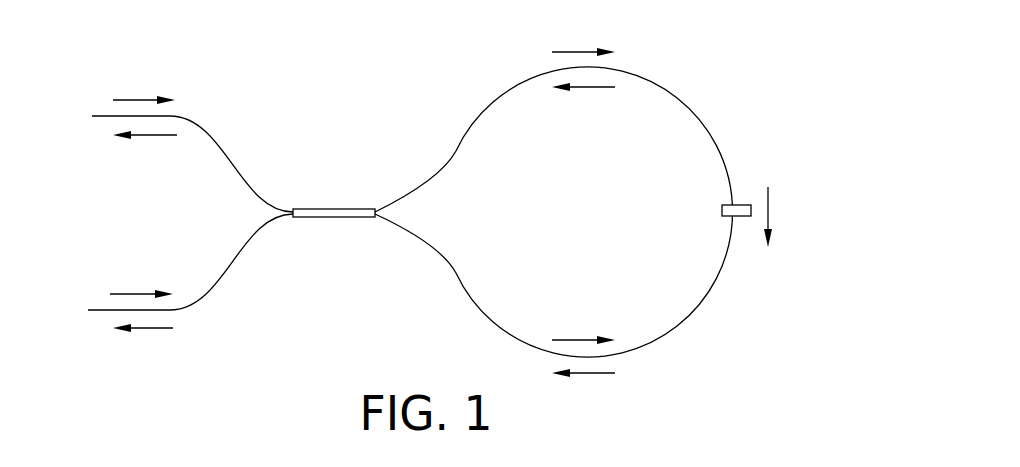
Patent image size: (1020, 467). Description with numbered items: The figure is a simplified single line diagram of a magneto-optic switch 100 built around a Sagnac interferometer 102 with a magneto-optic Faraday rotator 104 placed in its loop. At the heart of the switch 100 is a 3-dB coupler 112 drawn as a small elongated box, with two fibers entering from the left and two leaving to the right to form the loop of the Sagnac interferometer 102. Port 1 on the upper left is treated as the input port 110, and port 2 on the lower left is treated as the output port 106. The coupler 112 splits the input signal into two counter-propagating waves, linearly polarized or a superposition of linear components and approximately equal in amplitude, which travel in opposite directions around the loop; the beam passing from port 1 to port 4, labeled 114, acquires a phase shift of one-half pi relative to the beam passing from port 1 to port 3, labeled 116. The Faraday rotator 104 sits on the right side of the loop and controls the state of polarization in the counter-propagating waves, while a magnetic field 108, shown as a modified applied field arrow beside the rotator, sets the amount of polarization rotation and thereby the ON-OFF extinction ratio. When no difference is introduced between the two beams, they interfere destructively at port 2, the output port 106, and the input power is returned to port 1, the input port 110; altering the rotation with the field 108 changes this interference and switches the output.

The magneto-optic switch 100 is at (70, 193).
The Sagnac interferometer 102 is at (465, 130).
The magneto-optic Faraday rotator 104 is at (748, 217).
The output port 106 is at (99, 310).
The magnetic field 108 is at (772, 198).
The input port 110 is at (102, 115).
The 3-dB coupler 112 is at (348, 208).
The port 4 114 is at (443, 258).
The port 3 116 is at (443, 176).
The port 1 is at (262, 180).
The port 2 is at (255, 255).
The port 3 is at (415, 180).
The port 4 is at (423, 255).